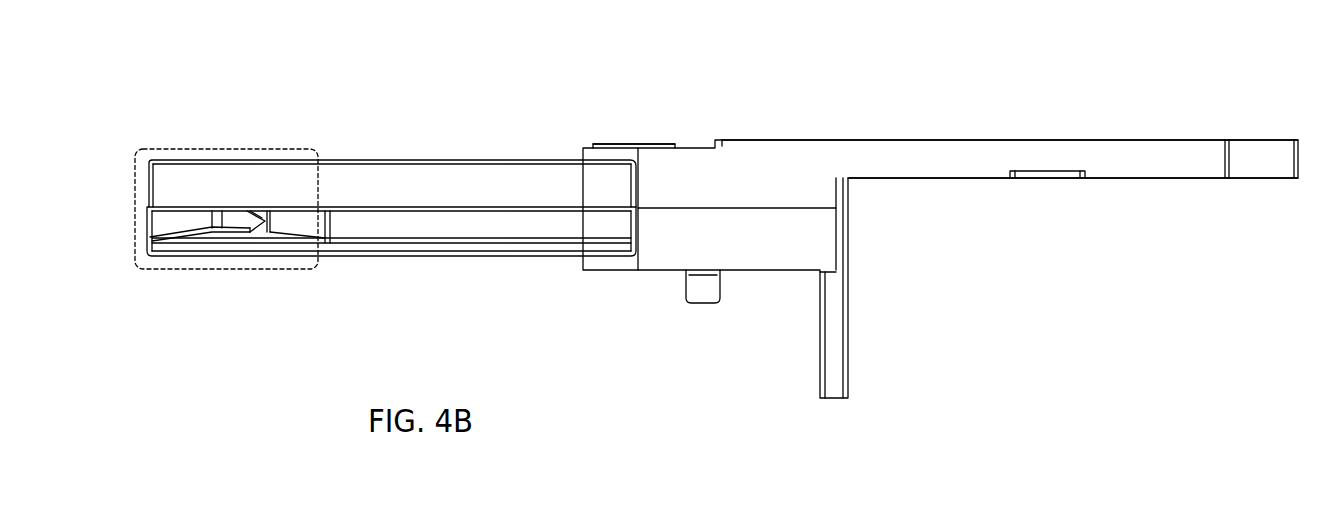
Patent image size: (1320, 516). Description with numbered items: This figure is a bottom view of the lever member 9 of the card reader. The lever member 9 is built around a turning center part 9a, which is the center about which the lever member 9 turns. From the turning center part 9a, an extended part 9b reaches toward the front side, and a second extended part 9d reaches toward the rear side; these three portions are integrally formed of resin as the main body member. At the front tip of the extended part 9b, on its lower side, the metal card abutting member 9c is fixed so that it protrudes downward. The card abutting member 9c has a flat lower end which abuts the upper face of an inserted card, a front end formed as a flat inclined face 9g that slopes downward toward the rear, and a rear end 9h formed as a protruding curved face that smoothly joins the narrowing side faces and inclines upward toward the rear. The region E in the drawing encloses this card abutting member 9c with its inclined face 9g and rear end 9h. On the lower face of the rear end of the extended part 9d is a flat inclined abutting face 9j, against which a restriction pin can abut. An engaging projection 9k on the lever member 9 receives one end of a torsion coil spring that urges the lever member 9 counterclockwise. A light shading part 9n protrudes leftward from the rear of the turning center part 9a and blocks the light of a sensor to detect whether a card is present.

The lever member 9 is at (1197, 63).
The turning center part 9a is at (695, 147).
The extended part 9b is at (456, 160).
The card abutting member 9c is at (232, 230).
The extended part 9d is at (1046, 140).
The inclined face 9g is at (173, 222).
The rear end 9h is at (265, 216).
The abutting face 9j is at (1262, 170).
The engaging projection 9k is at (700, 305).
The light shading part 9n is at (850, 357).
The region E is at (310, 150).